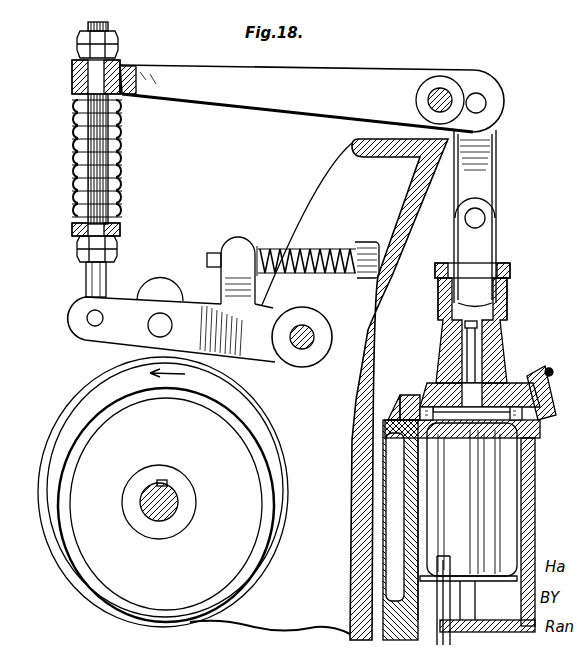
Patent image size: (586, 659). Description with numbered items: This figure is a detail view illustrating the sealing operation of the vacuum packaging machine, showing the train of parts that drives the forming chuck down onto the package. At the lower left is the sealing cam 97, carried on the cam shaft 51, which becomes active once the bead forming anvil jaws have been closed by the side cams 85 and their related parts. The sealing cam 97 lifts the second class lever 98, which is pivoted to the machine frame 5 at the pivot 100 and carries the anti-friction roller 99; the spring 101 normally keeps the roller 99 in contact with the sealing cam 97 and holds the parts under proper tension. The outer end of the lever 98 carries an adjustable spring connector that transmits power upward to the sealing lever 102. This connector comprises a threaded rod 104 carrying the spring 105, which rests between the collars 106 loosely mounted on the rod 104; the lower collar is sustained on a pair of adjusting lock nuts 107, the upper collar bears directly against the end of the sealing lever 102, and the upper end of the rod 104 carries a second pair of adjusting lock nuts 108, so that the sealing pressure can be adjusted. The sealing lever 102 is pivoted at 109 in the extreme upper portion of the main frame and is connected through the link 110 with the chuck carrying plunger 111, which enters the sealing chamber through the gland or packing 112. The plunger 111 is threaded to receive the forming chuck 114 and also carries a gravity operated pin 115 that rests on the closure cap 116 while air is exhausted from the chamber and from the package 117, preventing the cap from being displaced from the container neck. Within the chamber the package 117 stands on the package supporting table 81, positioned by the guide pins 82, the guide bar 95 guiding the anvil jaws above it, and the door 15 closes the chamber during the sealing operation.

The machine frame 5 is at (378, 343).
The door 15 is at (535, 490).
The shaft 51 is at (161, 522).
The package supporting table 81 is at (494, 582).
The guide pins 82 is at (445, 556).
The side cams 85 is at (54, 470).
The guide bar 95 is at (552, 410).
The sealing cam 97 is at (72, 398).
The second class lever 98 is at (200, 308).
The anti-friction roller 99 is at (156, 294).
The pivot 100 is at (302, 350).
The spring 101 is at (316, 248).
The sealing lever 102 is at (297, 70).
The threaded rod 104 is at (85, 283).
The spring 105 is at (73, 174).
The collars 106 is at (74, 102).
The adjusting lock nuts 107 is at (117, 245).
The second pair of adjusting lock nuts 108 is at (118, 48).
The pivot 109 is at (441, 90).
The link 110 is at (497, 158).
The chuck carrying plunger 111 is at (496, 234).
The gland or packing 112 is at (508, 300).
The forming chuck 114 is at (500, 390).
The gravity operated pin 115 is at (478, 332).
The closure cap 116 is at (440, 400).
The package 117 is at (512, 460).